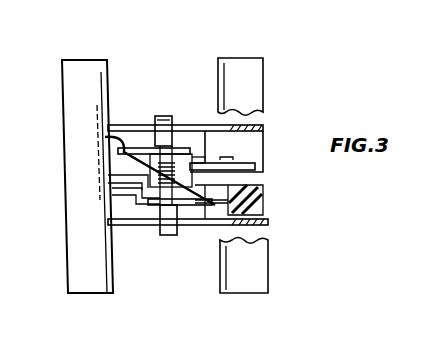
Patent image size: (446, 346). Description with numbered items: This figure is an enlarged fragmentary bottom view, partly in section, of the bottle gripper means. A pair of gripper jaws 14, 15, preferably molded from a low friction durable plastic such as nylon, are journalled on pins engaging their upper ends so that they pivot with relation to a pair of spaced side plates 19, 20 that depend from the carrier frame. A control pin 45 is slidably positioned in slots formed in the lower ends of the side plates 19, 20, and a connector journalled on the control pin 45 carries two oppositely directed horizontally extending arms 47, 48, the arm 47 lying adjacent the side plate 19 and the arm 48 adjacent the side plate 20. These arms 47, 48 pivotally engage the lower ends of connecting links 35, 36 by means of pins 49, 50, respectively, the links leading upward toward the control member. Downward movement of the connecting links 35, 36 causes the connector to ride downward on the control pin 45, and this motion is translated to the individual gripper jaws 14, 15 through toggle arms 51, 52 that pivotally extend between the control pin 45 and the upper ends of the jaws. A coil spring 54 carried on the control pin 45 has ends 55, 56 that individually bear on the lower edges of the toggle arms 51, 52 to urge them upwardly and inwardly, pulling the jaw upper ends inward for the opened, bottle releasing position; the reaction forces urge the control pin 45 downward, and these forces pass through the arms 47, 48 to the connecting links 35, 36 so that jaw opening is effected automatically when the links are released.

The gripper jaw 14 is at (70, 254).
The gripper jaw 15 is at (258, 94).
The side plate 19 is at (118, 126).
The side plate 20 is at (217, 210).
The connecting link 35 is at (245, 176).
The connecting link 36 is at (127, 180).
The control pin 45 is at (166, 118).
The arm 47 is at (213, 166).
The arm 48 is at (145, 205).
The pin 49 is at (236, 160).
The pin 50 is at (118, 194).
The toggle arm 51 is at (152, 150).
The toggle arm 52 is at (190, 213).
The coil spring 54 is at (179, 150).
The spring end 55 is at (106, 137).
The spring end 56 is at (250, 240).